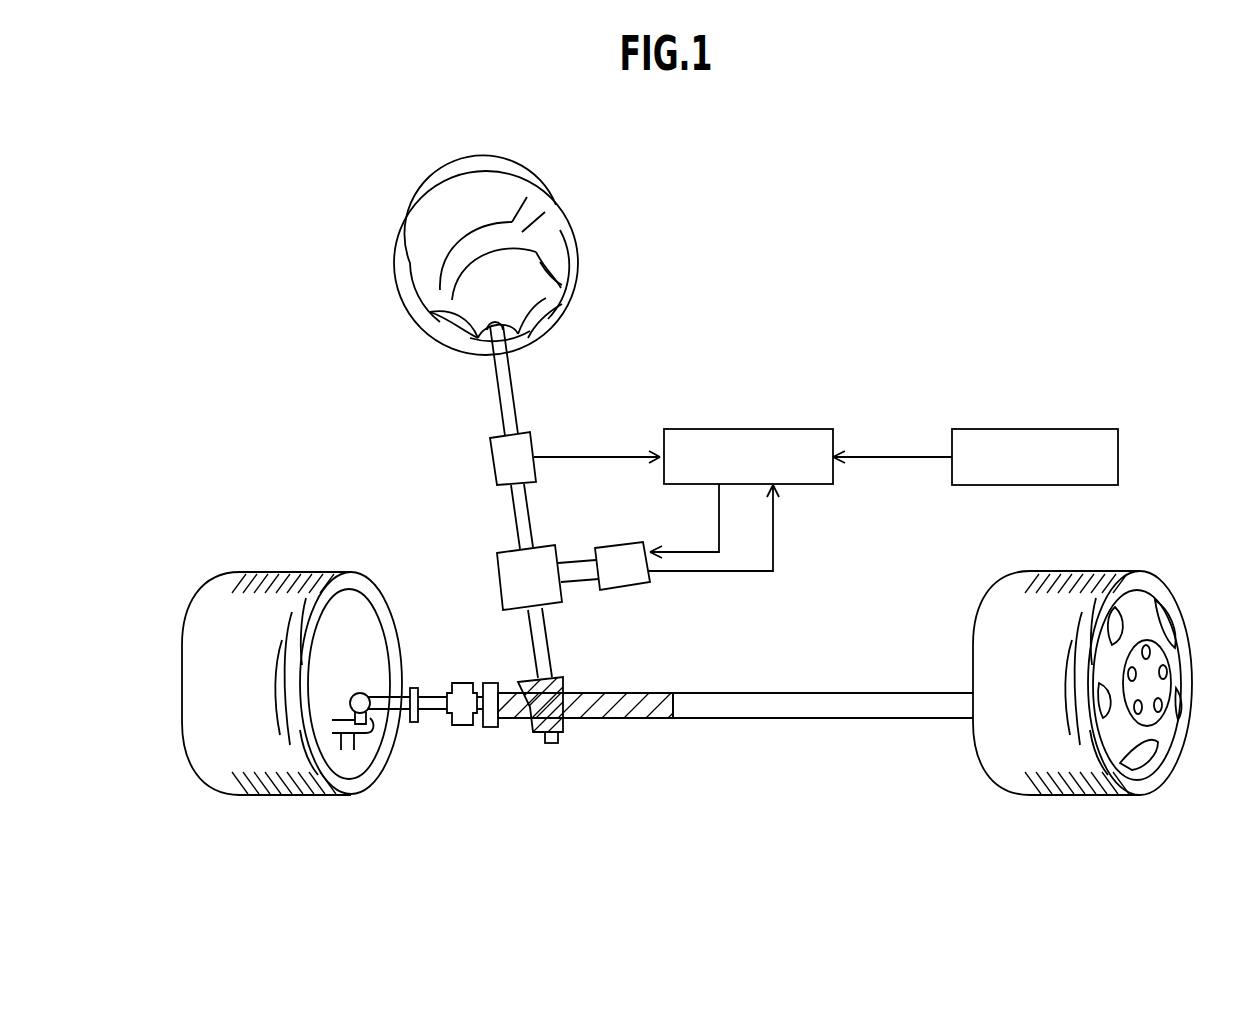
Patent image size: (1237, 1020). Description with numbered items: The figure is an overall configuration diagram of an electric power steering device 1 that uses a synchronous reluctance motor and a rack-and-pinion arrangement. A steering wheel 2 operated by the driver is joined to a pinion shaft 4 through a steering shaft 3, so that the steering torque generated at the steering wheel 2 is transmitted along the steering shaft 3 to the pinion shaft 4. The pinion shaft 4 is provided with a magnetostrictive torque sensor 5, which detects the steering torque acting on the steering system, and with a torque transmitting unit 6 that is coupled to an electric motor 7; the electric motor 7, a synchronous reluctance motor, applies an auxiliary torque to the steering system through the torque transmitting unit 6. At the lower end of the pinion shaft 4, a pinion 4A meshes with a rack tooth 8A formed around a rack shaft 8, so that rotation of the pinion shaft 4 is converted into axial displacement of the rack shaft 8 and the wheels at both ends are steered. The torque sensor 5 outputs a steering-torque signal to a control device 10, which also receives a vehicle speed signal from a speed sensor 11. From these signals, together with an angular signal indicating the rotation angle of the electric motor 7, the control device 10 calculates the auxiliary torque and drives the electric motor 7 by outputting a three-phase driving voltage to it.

The electric power steering device 1 is at (745, 253).
The steering wheel 2 is at (400, 275).
The steering shaft 3 is at (505, 398).
The pinion shaft 4 is at (541, 642).
The pinion 4A is at (549, 716).
The magnetostrictive torque sensor 5 is at (502, 467).
The torque transmitting unit 6 is at (505, 575).
The electric motor 7 is at (627, 574).
The rack shaft 8 is at (805, 706).
The rack tooth 8A is at (617, 715).
The control device 10 is at (792, 430).
The speed sensor 11 is at (1035, 429).